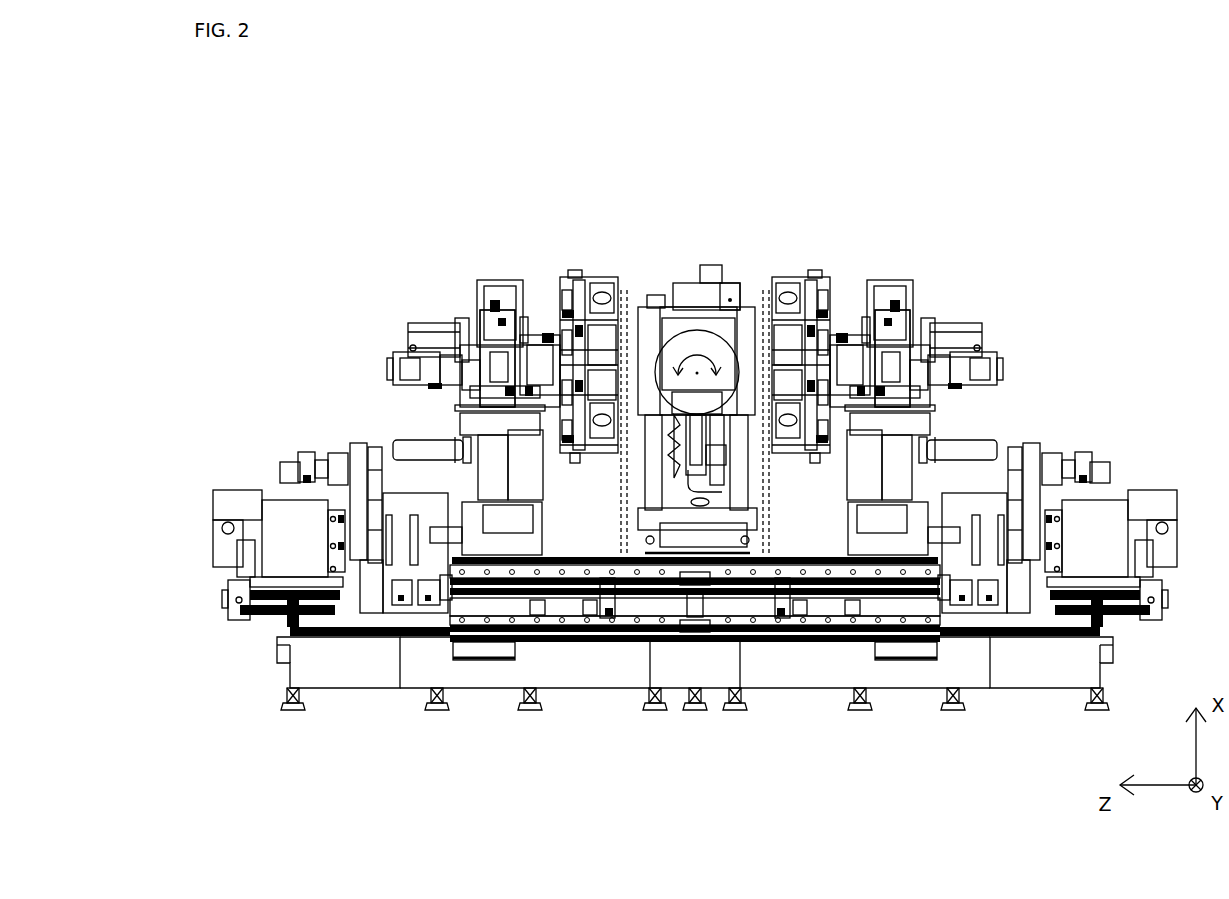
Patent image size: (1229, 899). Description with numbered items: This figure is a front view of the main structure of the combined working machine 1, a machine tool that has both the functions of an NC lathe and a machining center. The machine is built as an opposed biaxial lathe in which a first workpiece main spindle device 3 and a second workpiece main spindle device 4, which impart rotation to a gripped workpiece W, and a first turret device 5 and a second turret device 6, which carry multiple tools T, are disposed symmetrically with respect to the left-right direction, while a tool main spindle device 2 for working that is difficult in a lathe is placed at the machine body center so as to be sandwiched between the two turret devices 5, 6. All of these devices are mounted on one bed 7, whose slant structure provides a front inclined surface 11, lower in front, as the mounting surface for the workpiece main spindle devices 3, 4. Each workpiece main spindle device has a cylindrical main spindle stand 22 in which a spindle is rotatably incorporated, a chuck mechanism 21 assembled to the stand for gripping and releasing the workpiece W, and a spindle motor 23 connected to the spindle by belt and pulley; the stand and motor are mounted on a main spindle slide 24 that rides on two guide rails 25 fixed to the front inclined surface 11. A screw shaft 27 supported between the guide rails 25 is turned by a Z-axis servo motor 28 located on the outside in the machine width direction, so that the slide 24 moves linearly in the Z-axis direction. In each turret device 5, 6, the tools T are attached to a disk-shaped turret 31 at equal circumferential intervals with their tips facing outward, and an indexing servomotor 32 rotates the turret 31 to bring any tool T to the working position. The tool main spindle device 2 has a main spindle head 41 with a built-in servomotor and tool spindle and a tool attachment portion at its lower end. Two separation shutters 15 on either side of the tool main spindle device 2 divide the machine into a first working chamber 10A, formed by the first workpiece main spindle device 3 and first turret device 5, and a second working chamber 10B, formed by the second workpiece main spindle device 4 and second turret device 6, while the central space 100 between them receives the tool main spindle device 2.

The combined working machine 1 is at (710, 195).
The tool main spindle device 2 is at (656, 290).
The first workpiece main spindle device 3 is at (308, 438).
The second workpiece main spindle device 4 is at (1110, 443).
The first turret device 5 is at (466, 270).
The second turret device 6 is at (922, 258).
The bed 7 is at (327, 663).
The front inclined surface 11 is at (650, 640).
The separation shutter 15 is at (620, 267).
The chuck mechanism 21 is at (458, 460).
The main spindle stand 22 is at (410, 448).
The spindle motor 23 is at (282, 527).
The main spindle slide 24 is at (352, 612).
The guide rail 25 is at (662, 600).
The screw shaft 27 is at (507, 600).
The Z-axis servo motor 28 is at (235, 600).
The turret 31 is at (560, 313).
The indexing servomotor 32 is at (428, 343).
The main spindle head 41 is at (714, 336).
The machining space 100 is at (758, 482).
The first working chamber 10A is at (600, 545).
The second working chamber 10B is at (830, 538).
The workpiece W is at (542, 462).
The tool T is at (668, 430).